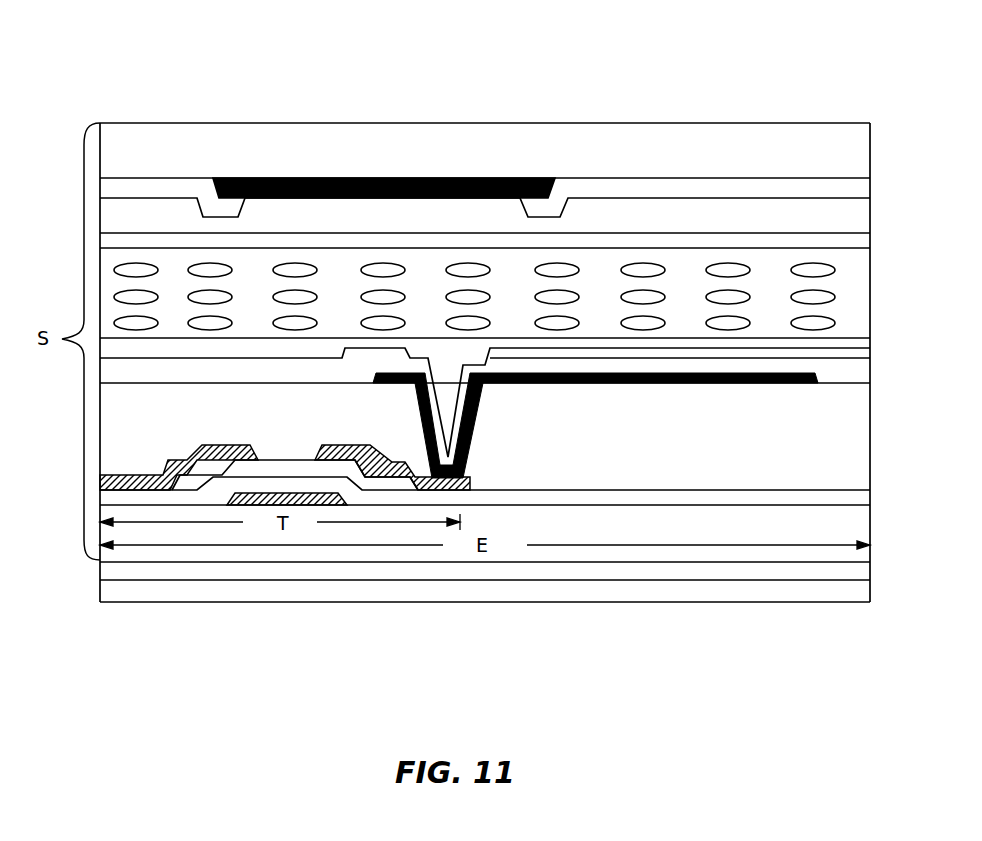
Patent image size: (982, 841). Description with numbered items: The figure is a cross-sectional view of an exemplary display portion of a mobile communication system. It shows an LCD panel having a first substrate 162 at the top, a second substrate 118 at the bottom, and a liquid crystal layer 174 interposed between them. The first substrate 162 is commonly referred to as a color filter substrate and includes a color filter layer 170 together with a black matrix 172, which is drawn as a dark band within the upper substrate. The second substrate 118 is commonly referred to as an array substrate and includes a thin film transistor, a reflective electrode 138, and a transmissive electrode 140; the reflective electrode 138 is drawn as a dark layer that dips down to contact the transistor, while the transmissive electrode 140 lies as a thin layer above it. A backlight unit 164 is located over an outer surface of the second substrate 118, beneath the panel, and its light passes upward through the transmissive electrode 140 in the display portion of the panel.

The first substrate 162 is at (467, 167).
The color filter layer 170 is at (697, 188).
The black matrix 172 is at (518, 178).
The liquid crystal layer 174 is at (296, 266).
The transmissive electrode 140 is at (772, 355).
The reflective electrode 138 is at (668, 385).
The second substrate 118 is at (605, 536).
The backlight unit 164 is at (325, 588).